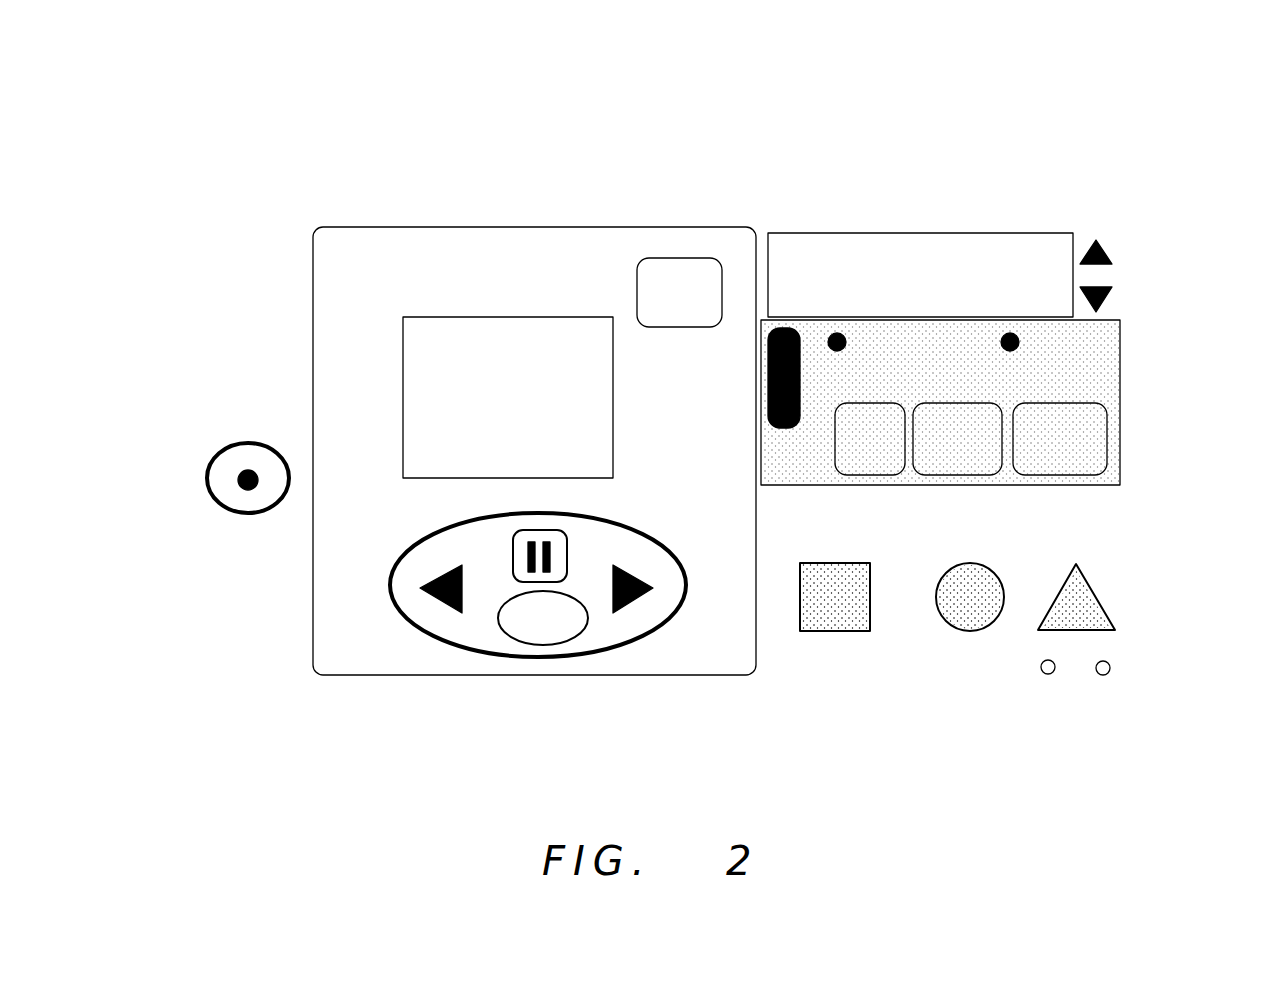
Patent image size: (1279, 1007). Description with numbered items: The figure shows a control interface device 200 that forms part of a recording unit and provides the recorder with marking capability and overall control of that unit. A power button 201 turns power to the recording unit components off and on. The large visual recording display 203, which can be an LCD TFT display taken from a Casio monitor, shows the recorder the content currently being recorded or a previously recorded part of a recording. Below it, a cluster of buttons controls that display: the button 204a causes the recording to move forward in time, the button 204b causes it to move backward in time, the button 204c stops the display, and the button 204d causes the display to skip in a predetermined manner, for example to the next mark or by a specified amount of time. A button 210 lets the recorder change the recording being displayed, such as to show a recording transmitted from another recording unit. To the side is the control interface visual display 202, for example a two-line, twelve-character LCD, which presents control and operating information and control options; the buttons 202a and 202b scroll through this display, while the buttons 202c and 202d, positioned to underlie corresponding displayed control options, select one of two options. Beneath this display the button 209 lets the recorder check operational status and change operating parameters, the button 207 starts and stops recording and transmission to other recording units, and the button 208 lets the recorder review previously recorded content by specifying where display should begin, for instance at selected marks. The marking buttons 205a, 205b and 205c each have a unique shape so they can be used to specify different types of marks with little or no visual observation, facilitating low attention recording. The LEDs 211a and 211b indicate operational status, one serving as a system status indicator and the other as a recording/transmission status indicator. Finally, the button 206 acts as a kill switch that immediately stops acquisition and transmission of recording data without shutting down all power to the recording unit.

The control interface device 200 is at (1003, 110).
The power button 201 is at (770, 326).
The control interface visual display 202 is at (987, 233).
The scroll button 202a is at (1104, 253).
The scroll button 202b is at (1104, 298).
The control option selection button 202c is at (855, 341).
The control option selection button 202d is at (1033, 340).
The visual recording display 203 is at (494, 317).
The forward display button 204a is at (638, 603).
The backward display button 204b is at (447, 613).
The stop display button 204c is at (570, 547).
The skip button 204d is at (562, 645).
The marking button 205a is at (840, 632).
The marking button 205b is at (970, 631).
The marking button 205c is at (1095, 593).
The kill switch button 206 is at (210, 500).
The record/transmit button 207 is at (963, 480).
The review button 208 is at (1070, 480).
The status check button 209 is at (867, 480).
The display switching button 210 is at (648, 258).
The LED 211a is at (1052, 673).
The LED 211b is at (1110, 670).